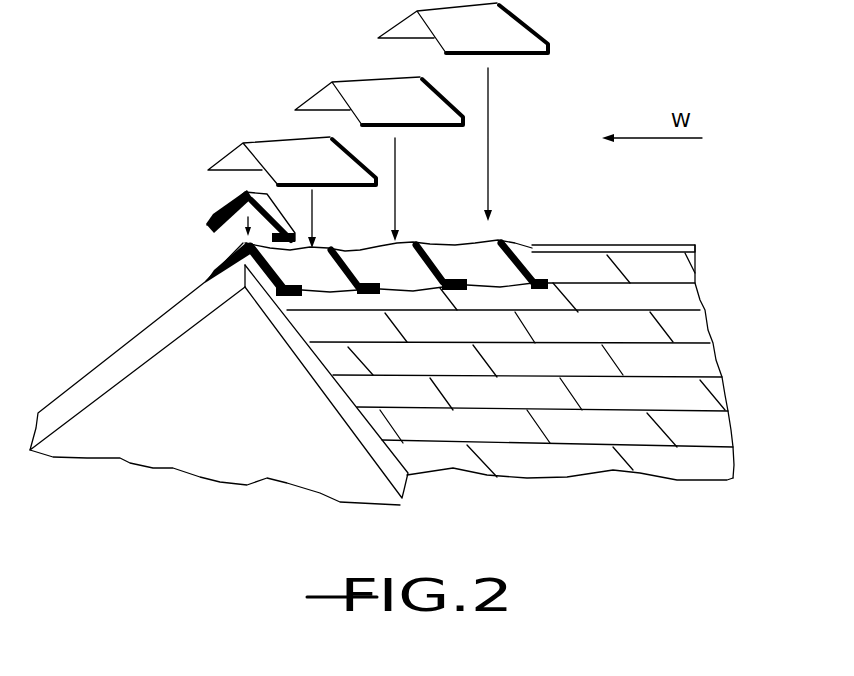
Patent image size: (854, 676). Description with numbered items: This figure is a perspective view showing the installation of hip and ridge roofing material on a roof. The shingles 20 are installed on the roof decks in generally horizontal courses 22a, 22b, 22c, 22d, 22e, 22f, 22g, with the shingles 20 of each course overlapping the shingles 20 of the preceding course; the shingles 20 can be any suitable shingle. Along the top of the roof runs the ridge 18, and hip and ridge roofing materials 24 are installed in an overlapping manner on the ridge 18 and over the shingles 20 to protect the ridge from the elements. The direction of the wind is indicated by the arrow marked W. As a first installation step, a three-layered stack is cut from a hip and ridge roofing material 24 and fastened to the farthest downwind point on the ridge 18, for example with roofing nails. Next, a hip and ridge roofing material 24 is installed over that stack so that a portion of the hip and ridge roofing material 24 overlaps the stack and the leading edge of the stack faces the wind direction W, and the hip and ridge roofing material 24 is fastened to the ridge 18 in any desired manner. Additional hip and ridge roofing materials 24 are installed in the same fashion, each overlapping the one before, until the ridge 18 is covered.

The ridge 18 is at (648, 245).
The shingles 20 is at (627, 430).
The course 22a is at (713, 467).
The course 22b is at (713, 430).
The course 22c is at (702, 400).
The course 22d is at (712, 367).
The course 22e is at (693, 328).
The course 22f is at (690, 297).
The course 22g is at (680, 270).
The hip and ridge roofing material 24 is at (397, 25).